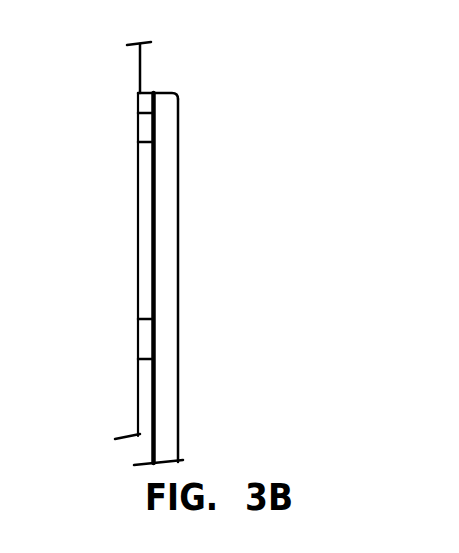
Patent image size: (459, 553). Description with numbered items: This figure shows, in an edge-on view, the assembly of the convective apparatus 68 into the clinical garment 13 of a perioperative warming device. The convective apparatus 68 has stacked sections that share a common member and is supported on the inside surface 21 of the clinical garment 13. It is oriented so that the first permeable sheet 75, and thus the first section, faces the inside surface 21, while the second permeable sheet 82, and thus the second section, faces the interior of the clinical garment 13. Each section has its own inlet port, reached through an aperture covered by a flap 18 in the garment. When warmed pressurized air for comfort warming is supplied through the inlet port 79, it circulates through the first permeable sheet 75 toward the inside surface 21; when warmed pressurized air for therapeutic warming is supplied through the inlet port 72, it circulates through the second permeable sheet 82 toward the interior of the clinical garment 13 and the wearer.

The clinical garment 13 is at (112, 83).
The inside surface 21 is at (142, 67).
The flap 18 is at (137, 100).
The inlet port 79 is at (143, 143).
The first permeable sheet 75 is at (152, 265).
The inlet port 72 is at (139, 355).
The convective apparatus 68 is at (243, 187).
The second permeable sheet 82 is at (178, 305).